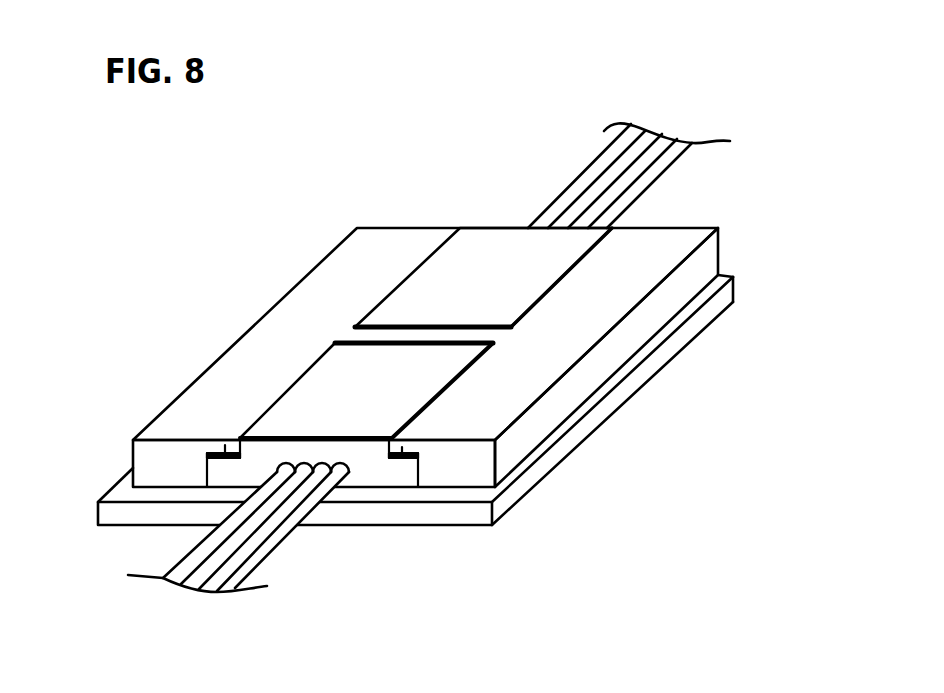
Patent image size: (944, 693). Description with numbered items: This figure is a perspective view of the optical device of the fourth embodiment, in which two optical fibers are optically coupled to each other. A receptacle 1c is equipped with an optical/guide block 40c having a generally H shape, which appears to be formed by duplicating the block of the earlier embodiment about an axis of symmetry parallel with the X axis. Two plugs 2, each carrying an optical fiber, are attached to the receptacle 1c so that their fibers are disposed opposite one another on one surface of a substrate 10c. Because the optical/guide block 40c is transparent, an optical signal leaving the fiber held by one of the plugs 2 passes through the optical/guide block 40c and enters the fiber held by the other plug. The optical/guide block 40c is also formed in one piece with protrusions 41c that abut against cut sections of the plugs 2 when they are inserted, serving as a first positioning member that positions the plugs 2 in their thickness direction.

The receptacle 1c is at (416, 332).
The plug 2 is at (454, 268).
The substrate 10c is at (597, 415).
The optical/guide block 40c is at (640, 327).
The protrusion 41c is at (224, 454).